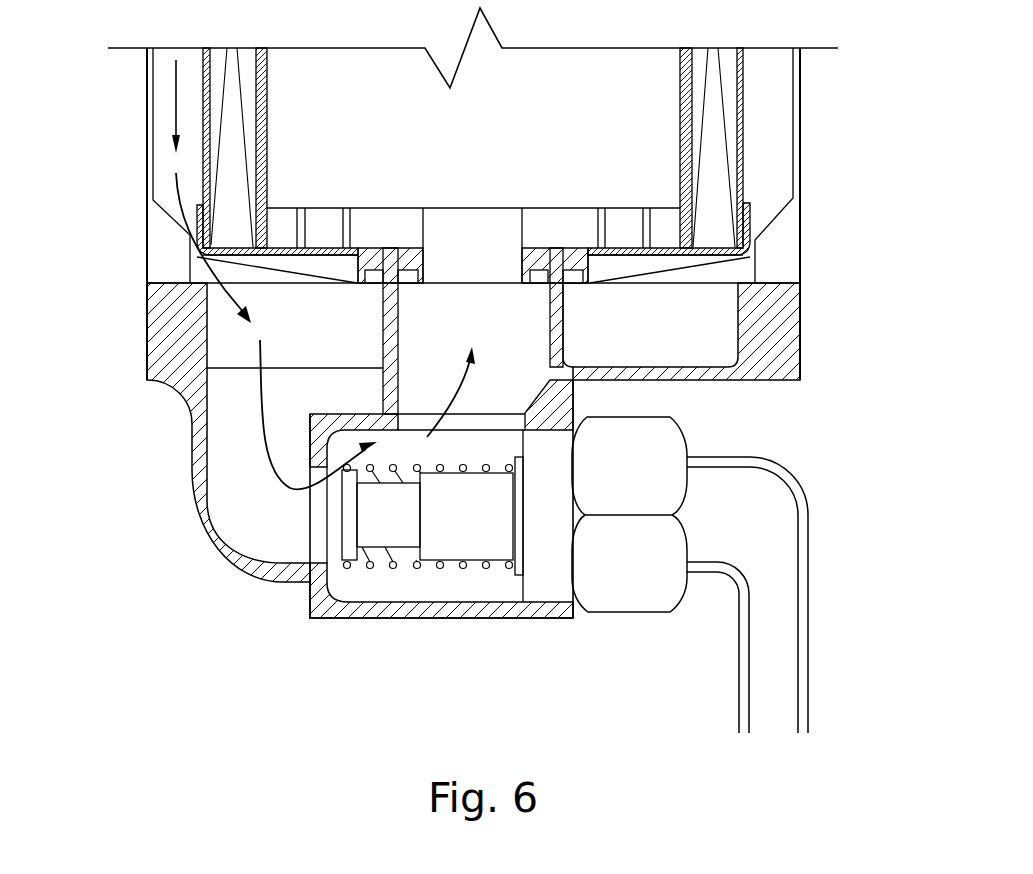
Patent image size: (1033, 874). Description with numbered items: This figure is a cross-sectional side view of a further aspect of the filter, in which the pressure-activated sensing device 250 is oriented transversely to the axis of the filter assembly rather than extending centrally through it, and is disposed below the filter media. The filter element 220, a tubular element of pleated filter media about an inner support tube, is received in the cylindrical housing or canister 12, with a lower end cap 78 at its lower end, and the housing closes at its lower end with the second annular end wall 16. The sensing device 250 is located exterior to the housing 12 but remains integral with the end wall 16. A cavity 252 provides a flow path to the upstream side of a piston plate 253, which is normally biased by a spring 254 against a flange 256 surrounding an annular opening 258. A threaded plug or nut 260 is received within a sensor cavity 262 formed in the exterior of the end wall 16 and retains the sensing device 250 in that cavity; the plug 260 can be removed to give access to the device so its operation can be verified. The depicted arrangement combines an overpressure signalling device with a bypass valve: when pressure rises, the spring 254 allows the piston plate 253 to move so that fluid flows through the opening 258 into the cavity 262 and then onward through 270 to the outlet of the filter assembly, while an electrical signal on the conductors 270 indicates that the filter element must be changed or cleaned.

The housing 12 is at (148, 130).
The filter element 220 is at (748, 118).
The lower end cap 78 is at (713, 247).
The second annular end wall 16 is at (784, 346).
The conductors 270 is at (430, 423).
The cavity 252 is at (232, 418).
The flange 256 is at (312, 457).
The annular opening 258 is at (317, 515).
The piston plate 253 is at (335, 534).
The spring 254 is at (350, 616).
The sensor cavity 262 is at (452, 590).
The threaded plug or nut 260 is at (625, 594).
The pressure-activated sensing device 250 is at (793, 462).